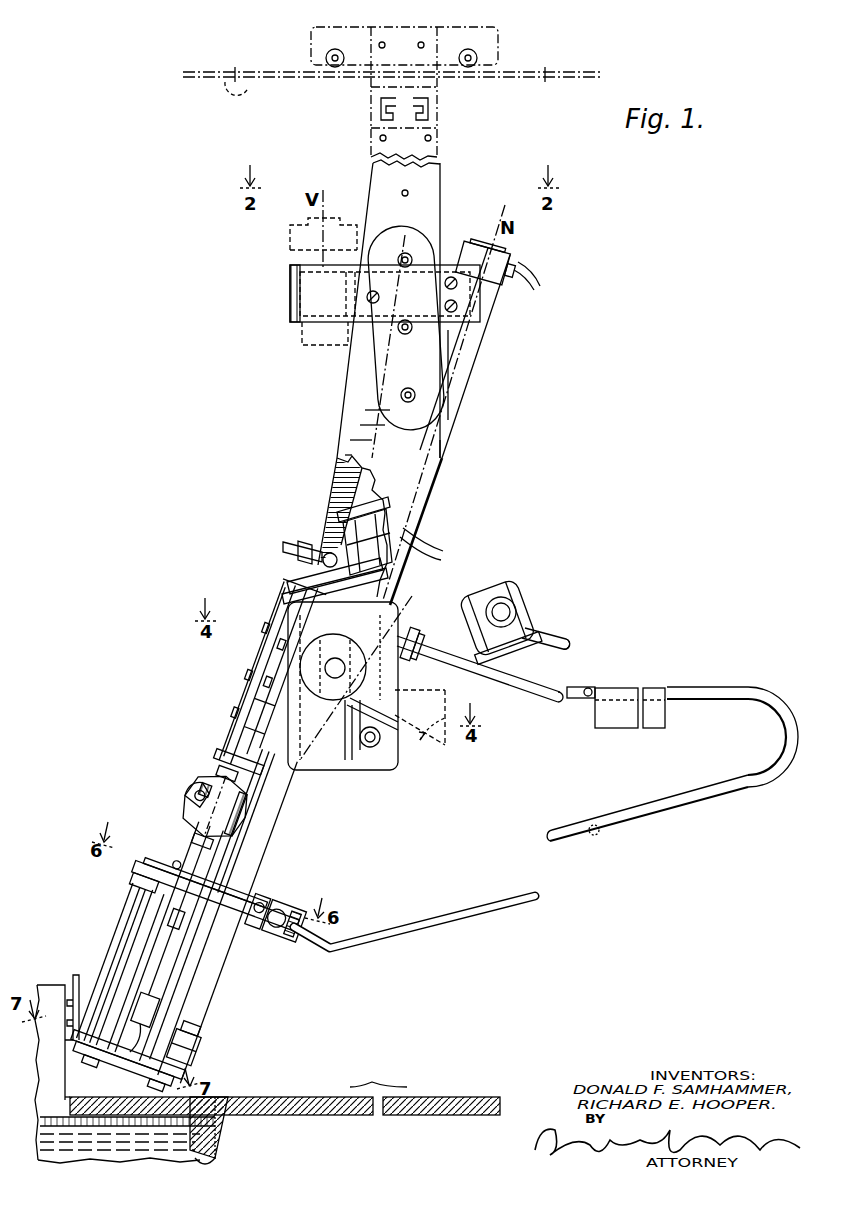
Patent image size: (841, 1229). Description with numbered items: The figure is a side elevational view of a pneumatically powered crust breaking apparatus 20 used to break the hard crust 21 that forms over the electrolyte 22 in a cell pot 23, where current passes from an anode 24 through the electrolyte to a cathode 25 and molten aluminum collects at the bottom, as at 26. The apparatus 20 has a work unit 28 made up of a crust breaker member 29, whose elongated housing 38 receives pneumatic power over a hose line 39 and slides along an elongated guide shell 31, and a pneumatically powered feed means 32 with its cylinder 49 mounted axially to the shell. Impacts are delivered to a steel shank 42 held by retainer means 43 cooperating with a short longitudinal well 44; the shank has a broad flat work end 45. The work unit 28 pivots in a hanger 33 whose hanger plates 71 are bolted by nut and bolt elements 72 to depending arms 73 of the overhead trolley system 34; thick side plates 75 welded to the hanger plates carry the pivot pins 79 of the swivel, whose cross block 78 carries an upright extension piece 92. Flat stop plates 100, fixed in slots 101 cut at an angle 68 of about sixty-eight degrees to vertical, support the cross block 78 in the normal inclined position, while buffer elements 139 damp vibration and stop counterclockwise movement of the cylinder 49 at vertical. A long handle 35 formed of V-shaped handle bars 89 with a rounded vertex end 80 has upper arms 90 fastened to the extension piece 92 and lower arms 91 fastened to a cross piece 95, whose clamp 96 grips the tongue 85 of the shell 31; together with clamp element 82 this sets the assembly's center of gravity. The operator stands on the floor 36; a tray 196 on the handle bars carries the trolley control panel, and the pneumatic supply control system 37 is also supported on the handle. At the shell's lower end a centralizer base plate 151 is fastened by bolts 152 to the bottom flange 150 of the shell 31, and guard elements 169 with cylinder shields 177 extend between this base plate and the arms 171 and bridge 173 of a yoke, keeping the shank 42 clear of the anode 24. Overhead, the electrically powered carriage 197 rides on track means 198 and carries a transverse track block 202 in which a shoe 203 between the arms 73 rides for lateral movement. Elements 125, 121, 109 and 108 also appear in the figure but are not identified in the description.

The electrically powered carriage 197 is at (311, 37).
The trolley or carriage system 34 is at (392, 54).
The track means 198 is at (240, 90).
The transverse channel or track block 202 is at (381, 108).
The shoe 203 is at (430, 104).
The depending arms 73 is at (442, 165).
The crust breaking apparatus 20 is at (333, 412).
The hanger plates 71 is at (336, 470).
The buffer elements 139 is at (290, 271).
The cylinder 49 is at (302, 335).
The nut and bolt elements 72 is at (402, 390).
The pneumatically powered feed means 32 is at (478, 345).
The limit switch 125 is at (526, 273).
The hanger 33 is at (443, 457).
The work unit 28 is at (278, 572).
The hose line 39 is at (290, 545).
The flexible conduit 121 is at (432, 548).
The side plates 75 is at (352, 772).
The pivot pins 79 is at (325, 700).
The stop plates 100 is at (382, 740).
The clamp element 82 is at (367, 673).
The cross block 78 is at (421, 705).
The slot 101 is at (390, 720).
The stop plate angle 68 is at (432, 729).
The upper arms of the handle 90 is at (435, 652).
The upright extension piece 92 is at (413, 630).
The valve cylinder 109 is at (490, 592).
The valve pipe 108 is at (553, 628).
The pneumatic supply control system 37 is at (570, 624).
The tray 196 is at (612, 728).
The long handle 35 is at (710, 686).
The vertex end 80 is at (772, 712).
The handle bars 89 is at (756, 800).
The crust breaker member 29 is at (232, 703).
The elongated housing 38 is at (260, 663).
The elongated guide shell 31 is at (256, 840).
The tongue 85 is at (266, 861).
The short longitudinal well 44 is at (245, 812).
The retainer means 43 is at (198, 798).
The bridge 173 is at (140, 870).
The guard elements 169 is at (130, 920).
The cylinder shield 177 is at (118, 962).
The steel shank 42 is at (166, 940).
The yoke arms 171 is at (196, 896).
The base plate 151 is at (150, 1015).
The broad flat work end 45 is at (108, 1072).
The bottom flange 150 is at (186, 1072).
The bolts 152 is at (190, 1048).
The clamp 96 is at (252, 940).
The cross piece 95 is at (282, 945).
The lower arms of the handle 91 is at (322, 950).
The floor 36 is at (445, 1097).
The anode 24 is at (52, 988).
The crust 21 is at (127, 1098).
The electrolyte 22 is at (127, 1135).
The cell pot 23 is at (222, 1132).
The cathode 25 is at (213, 1160).
The molten aluminum 26 is at (135, 1160).